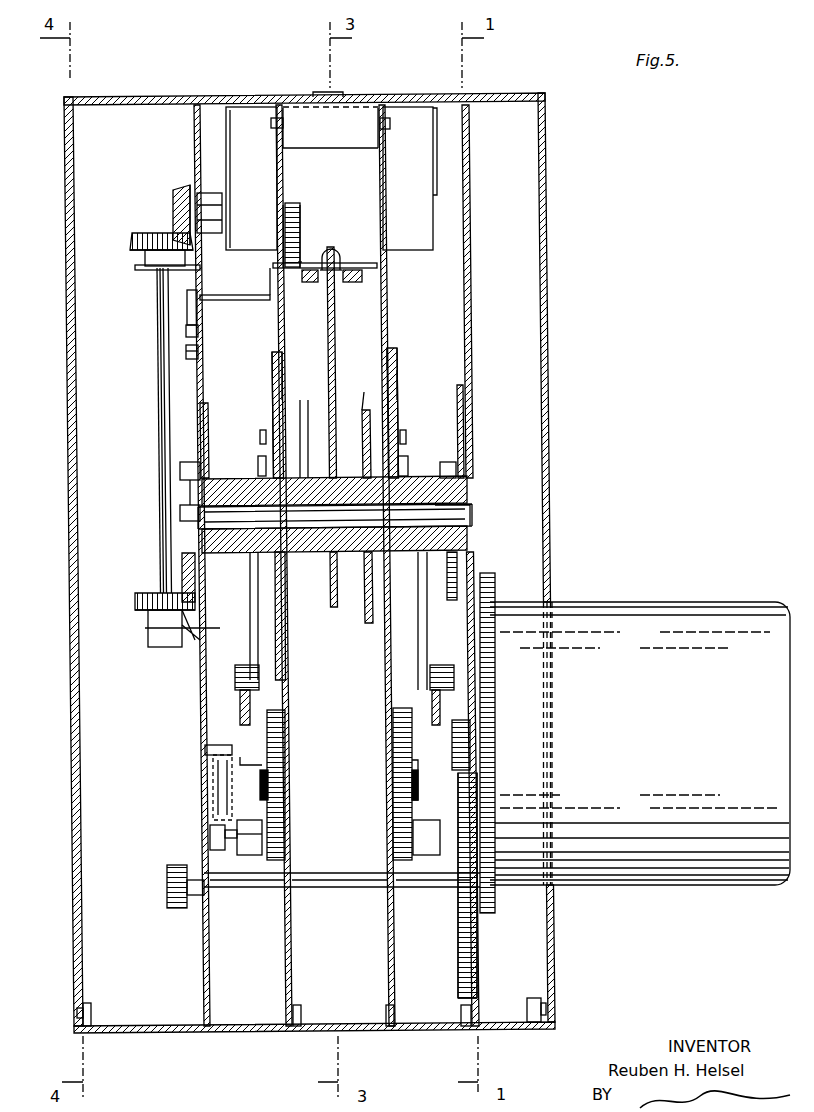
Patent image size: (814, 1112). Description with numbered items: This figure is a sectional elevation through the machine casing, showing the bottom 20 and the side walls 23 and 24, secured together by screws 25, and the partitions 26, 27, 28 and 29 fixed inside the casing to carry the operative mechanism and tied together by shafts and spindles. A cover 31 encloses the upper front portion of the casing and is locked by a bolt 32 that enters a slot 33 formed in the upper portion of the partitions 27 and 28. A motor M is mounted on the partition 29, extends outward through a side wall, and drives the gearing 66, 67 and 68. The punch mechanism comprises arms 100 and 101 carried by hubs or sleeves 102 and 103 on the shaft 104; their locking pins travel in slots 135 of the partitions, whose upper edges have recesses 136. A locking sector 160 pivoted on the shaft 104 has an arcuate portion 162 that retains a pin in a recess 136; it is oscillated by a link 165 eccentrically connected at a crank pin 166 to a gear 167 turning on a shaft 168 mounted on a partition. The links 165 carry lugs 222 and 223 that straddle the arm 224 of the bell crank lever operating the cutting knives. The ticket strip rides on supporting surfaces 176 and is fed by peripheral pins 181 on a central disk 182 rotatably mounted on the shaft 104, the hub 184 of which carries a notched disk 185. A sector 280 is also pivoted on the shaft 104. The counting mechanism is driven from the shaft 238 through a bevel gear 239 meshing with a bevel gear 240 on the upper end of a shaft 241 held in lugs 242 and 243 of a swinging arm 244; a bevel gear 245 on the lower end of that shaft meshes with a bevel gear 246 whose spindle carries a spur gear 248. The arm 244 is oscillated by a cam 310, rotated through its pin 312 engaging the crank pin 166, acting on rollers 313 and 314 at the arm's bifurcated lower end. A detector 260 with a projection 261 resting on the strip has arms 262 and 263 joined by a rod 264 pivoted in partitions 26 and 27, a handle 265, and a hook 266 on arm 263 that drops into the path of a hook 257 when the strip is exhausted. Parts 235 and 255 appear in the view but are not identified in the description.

The bottom 20 is at (250, 1033).
The side wall 23 is at (72, 905).
The side wall 24 is at (553, 930).
The screws 25 is at (77, 1013).
The partition 26 is at (202, 950).
The partition 27 is at (286, 948).
The partition 28 is at (390, 935).
The partition 29 is at (479, 952).
The cover 31 is at (513, 96).
The bolt 32 is at (390, 124).
The slot 33 is at (377, 117).
The gear 66 is at (471, 730).
The gear 67 is at (458, 950).
The gear 68 is at (170, 908).
The punch arm 100 is at (408, 474).
The punch arm 101 is at (262, 456).
The hub or sleeve 102 is at (430, 478).
The hub or sleeve 103 is at (252, 478).
The shaft 104 is at (472, 516).
The slot 135 is at (286, 362).
The recess 136 is at (286, 336).
The sector 160 is at (272, 386).
The arcuate portion 162 is at (272, 356).
The link 165 is at (253, 619).
The crank pin 166 is at (268, 834).
The gear 167 is at (392, 732).
The shaft 168 is at (394, 778).
The supporting surface 176 is at (310, 283).
The peripheral pin 181 is at (336, 250).
The central disk 182 is at (335, 356).
The hub 184 is at (305, 478).
The disk 185 is at (372, 376).
The lug 222 is at (240, 668).
The lug 223 is at (478, 778).
The arm 224 is at (240, 692).
The housing 235 is at (445, 148).
The shaft 238 is at (238, 205).
The bevel gear 239 is at (182, 190).
The bevel gear 240 is at (140, 235).
The shaft 241 is at (158, 296).
The lug 242 is at (135, 268).
The lug 243 is at (145, 628).
The arm 244 is at (160, 442).
The bevel gear 245 is at (140, 592).
The bevel gear 246 is at (182, 556).
The spur gear 248 is at (182, 640).
The bar 255 is at (200, 406).
The hook 257 is at (186, 356).
The detector 260 is at (272, 266).
The projection 261 is at (300, 260).
The arm 262 is at (276, 283).
The arm 263 is at (187, 318).
The rod 264 is at (268, 300).
The finger grip 265 is at (285, 220).
The hook 266 is at (186, 337).
The sector 280 is at (463, 436).
The cam 310 is at (213, 805).
The pin 312 is at (210, 836).
The roller 313 is at (236, 845).
The roller 314 is at (205, 750).
The motor M is at (698, 620).